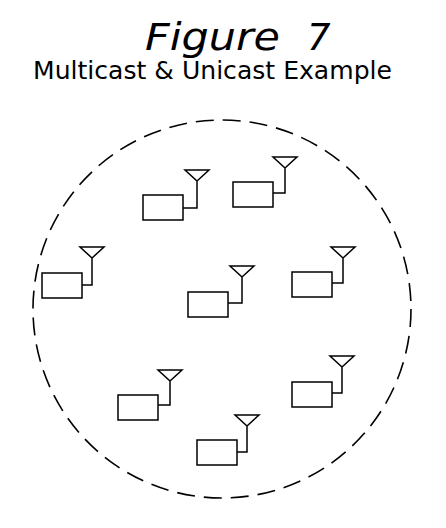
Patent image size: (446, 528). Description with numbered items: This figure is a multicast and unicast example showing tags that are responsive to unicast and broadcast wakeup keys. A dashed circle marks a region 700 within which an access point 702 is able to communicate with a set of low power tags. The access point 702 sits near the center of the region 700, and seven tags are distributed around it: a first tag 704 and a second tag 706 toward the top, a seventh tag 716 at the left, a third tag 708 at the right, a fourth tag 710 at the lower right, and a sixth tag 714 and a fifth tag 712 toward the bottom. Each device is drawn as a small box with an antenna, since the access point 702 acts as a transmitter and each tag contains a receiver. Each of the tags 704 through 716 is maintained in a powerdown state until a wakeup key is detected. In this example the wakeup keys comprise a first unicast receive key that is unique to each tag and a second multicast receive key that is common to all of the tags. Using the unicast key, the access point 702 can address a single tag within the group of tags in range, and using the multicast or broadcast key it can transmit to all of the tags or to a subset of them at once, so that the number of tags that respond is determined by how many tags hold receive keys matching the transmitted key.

The region 700 is at (342, 163).
The access point AP_1 702 is at (214, 306).
The tag Tag_1 704 is at (167, 210).
The tag Tag_2 706 is at (262, 197).
The tag Tag_3 708 is at (320, 287).
The tag Tag_4 710 is at (319, 396).
The tag Tag_5 712 is at (227, 454).
The tag Tag_6 714 is at (147, 409).
The tag Tag_7 716 is at (72, 287).